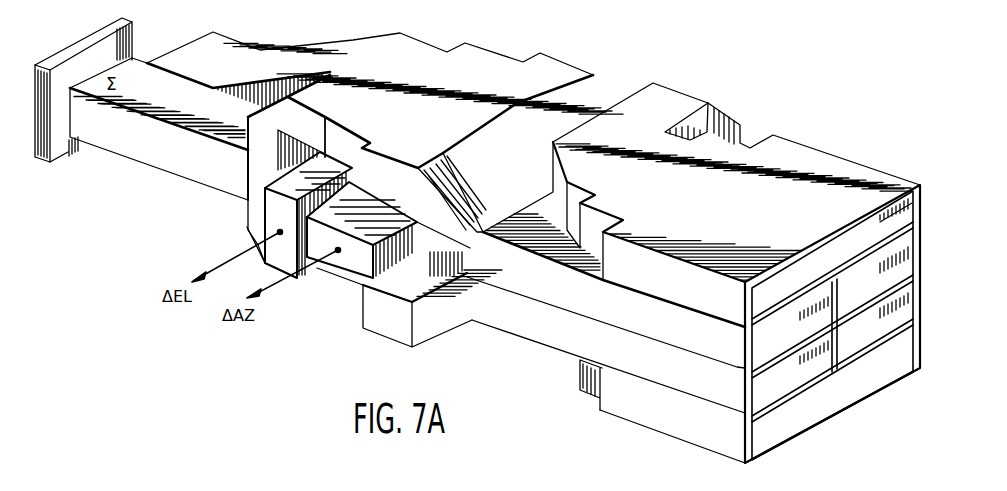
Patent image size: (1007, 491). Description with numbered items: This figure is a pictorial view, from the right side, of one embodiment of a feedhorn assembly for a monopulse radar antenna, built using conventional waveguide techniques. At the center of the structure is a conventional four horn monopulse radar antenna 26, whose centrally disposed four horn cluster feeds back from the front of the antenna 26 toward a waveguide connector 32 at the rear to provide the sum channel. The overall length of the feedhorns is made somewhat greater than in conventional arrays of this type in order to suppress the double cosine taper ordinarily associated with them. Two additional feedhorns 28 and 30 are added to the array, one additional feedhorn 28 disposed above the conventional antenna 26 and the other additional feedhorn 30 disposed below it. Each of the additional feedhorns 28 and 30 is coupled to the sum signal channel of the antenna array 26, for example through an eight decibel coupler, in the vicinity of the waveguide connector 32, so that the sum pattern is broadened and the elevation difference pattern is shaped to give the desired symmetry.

The waveguide connector 32 is at (81, 40).
The four horn monopulse radar antenna 26 is at (926, 243).
The additional feedhorn 28 is at (890, 223).
The additional feedhorn 30 is at (887, 365).